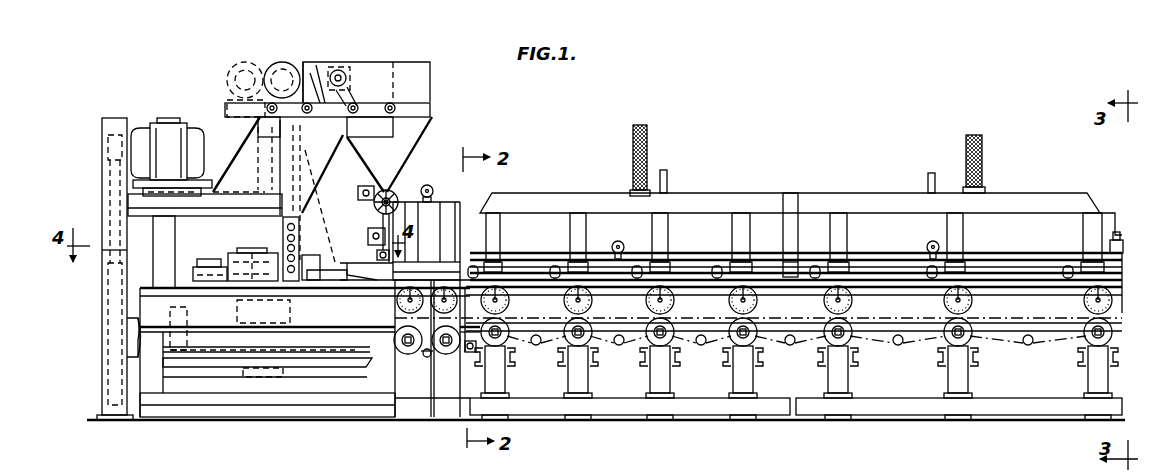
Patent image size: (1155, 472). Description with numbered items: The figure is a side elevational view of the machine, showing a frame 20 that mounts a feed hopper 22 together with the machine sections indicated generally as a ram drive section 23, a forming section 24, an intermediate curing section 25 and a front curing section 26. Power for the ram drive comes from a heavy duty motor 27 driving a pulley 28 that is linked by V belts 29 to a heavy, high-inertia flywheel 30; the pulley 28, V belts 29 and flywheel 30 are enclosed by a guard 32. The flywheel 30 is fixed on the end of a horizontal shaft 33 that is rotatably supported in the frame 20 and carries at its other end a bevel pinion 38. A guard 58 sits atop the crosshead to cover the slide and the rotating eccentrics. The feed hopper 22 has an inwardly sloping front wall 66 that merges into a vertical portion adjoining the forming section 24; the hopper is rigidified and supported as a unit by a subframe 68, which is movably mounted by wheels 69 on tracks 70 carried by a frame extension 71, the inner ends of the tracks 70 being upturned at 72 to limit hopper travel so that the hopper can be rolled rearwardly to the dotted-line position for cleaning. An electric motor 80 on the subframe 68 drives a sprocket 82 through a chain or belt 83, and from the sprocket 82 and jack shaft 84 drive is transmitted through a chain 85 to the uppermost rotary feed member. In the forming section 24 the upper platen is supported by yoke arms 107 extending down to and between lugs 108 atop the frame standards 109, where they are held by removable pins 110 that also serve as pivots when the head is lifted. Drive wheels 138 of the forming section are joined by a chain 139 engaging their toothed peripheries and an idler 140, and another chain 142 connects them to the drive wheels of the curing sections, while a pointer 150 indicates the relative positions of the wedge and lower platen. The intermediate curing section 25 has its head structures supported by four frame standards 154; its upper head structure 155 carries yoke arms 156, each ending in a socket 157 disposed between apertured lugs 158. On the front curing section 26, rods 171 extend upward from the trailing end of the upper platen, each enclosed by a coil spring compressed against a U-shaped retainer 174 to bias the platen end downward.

The frame 20 is at (1126, 408).
The feed hopper 22 is at (420, 52).
The ram drive section 23 is at (250, 424).
The forming section 24 is at (445, 402).
The intermediate curing section 25 is at (645, 424).
The front curing section 26 is at (962, 424).
The heavy duty motor 27 is at (172, 118).
The pulley 28 is at (106, 147).
The V belts 29 is at (110, 202).
The flywheel 30 is at (106, 337).
The guard 32 is at (101, 257).
The shaft 33 is at (128, 360).
The bevel pinion 38 is at (183, 309).
The guard 58 is at (268, 245).
The front wall 66 is at (416, 145).
The subframe 68 is at (430, 108).
The wheels 69 is at (395, 98).
The tracks 70 is at (378, 108).
The frame extension 71 is at (247, 168).
The upturned inner ends 72 is at (331, 103).
The electric motor 80 is at (280, 63).
The sprocket 82 is at (343, 72).
The chain or belt 83 is at (297, 62).
The jack shaft 84 is at (336, 70).
The chain 85 is at (396, 190).
The yoke arms 107 is at (443, 212).
The lugs 108 is at (430, 278).
The frame standards 109 is at (410, 405).
The removable pins 110 is at (380, 300).
The drive wheels 138 is at (400, 346).
The chain 139 is at (469, 376).
The idler 140 is at (422, 358).
The chain 142 is at (517, 343).
The pointer 150 is at (506, 304).
The frame standards 154 is at (664, 380).
The upper head structure 155 is at (578, 196).
The yoke arms 156 is at (660, 222).
The socket 157 is at (672, 262).
The apertured lugs 158 is at (640, 272).
The rods 171 is at (1102, 226).
The U-shaped retainer 174 is at (1119, 243).